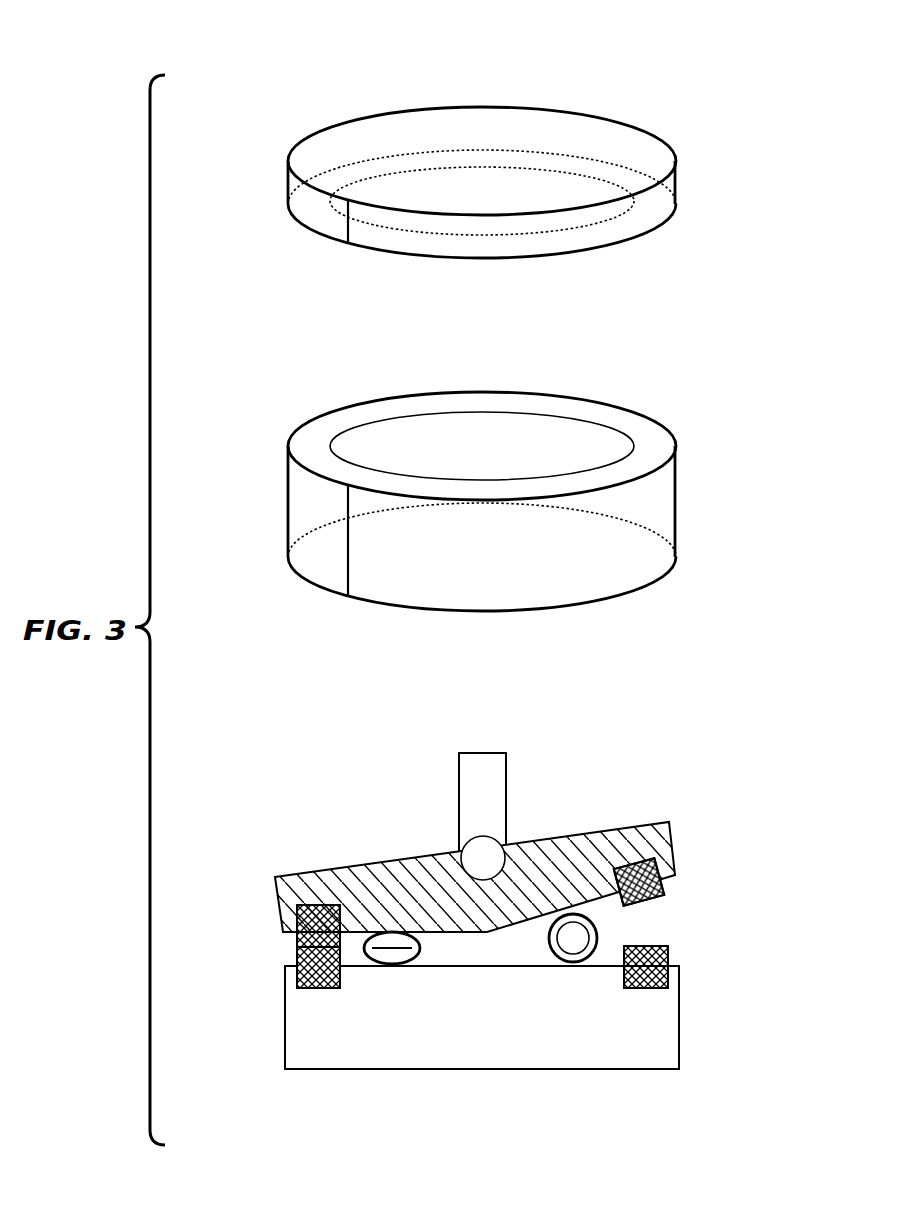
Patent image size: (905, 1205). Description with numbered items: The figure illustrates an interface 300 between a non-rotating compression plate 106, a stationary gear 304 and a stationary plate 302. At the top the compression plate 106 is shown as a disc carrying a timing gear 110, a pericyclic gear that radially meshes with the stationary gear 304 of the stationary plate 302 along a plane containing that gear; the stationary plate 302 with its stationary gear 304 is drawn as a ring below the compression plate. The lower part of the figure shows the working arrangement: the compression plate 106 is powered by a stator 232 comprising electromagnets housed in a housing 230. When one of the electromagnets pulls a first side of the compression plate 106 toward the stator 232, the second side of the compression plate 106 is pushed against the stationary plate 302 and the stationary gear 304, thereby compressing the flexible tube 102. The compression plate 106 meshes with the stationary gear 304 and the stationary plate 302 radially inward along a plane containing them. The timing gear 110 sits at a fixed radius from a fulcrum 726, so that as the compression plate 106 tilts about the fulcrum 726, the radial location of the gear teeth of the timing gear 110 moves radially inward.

The interface 300 is at (716, 75).
The non-rotating compression plate 106 is at (676, 185).
The timing gear 110 is at (332, 207).
The stationary plate 302 is at (676, 518).
The stationary gear 304 is at (315, 445).
The fulcrum 726 is at (470, 753).
The flexible tube 102 is at (384, 965).
The housing 230 is at (317, 1069).
The stator 232 is at (478, 1069).